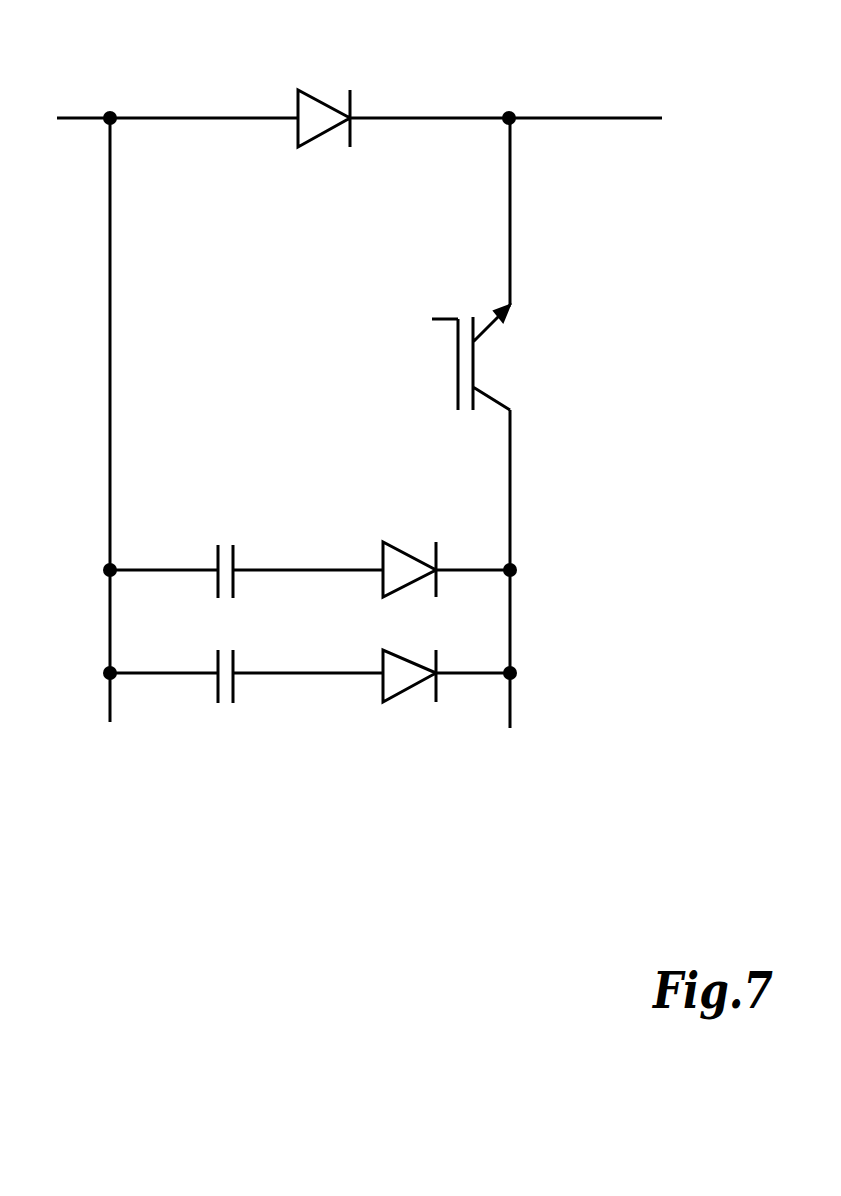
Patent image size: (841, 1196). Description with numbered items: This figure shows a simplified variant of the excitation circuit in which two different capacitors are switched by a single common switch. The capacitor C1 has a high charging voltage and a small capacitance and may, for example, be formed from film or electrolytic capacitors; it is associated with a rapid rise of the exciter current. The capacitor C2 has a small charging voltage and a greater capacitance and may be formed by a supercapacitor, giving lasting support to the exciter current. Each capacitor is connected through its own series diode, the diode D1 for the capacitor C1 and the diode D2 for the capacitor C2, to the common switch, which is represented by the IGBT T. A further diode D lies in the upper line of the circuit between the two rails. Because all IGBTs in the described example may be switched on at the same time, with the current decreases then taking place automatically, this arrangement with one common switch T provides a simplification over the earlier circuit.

The diode D is at (323, 110).
The IGBT T is at (458, 386).
The capacitor C1 is at (233, 560).
The diode D1 is at (400, 565).
The capacitor C2 is at (233, 692).
The diode D2 is at (400, 685).